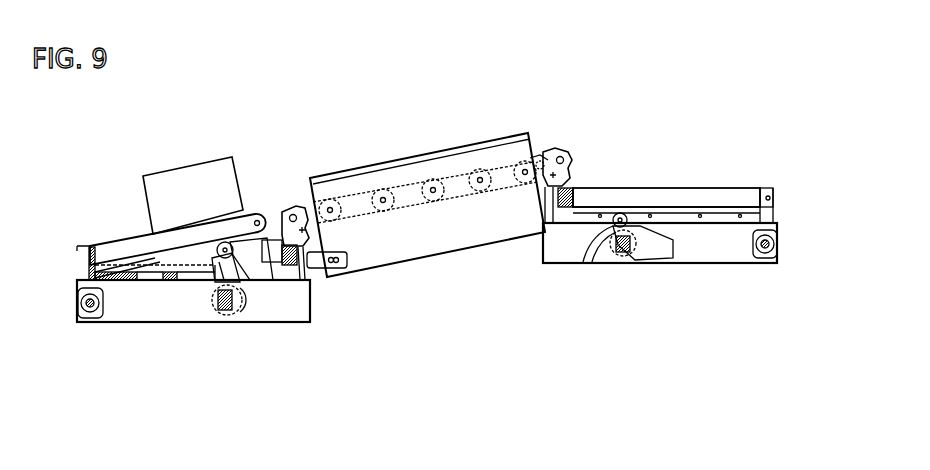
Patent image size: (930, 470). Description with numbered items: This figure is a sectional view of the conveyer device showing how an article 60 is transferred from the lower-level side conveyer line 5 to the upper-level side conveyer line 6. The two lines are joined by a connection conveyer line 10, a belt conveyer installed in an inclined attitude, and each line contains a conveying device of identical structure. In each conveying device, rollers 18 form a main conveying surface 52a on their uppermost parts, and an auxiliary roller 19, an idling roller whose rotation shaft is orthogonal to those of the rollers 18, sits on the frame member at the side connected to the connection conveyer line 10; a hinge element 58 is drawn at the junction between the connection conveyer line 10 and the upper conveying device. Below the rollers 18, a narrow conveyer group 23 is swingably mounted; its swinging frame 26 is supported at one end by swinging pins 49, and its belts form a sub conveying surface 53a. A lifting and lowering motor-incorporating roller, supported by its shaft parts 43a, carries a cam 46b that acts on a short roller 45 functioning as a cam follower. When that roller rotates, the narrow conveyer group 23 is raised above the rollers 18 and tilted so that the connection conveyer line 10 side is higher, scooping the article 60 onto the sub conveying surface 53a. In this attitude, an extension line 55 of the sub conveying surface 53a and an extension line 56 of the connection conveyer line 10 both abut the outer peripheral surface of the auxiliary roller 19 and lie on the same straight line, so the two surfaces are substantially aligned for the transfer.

The lower-level side conveyer line 5 is at (93, 168).
The upper-level side conveyer line 6 is at (727, 113).
The connection conveyer line 10 is at (427, 227).
The rollers 18 is at (157, 262).
The auxiliary roller 19 is at (293, 210).
The narrow conveyer group 23 is at (250, 208).
The swinging frame 26 is at (257, 258).
The shaft part 43a is at (217, 252).
The short roller 45 is at (260, 273).
The cam 46b is at (218, 313).
The swinging pin 49 is at (88, 316).
The main conveying surface 52a is at (135, 237).
The sub conveying surface 53a is at (140, 238).
The extension line 55 is at (281, 207).
The extension line 56 is at (307, 245).
The hinge pin 58 is at (546, 152).
The article 60 is at (187, 162).